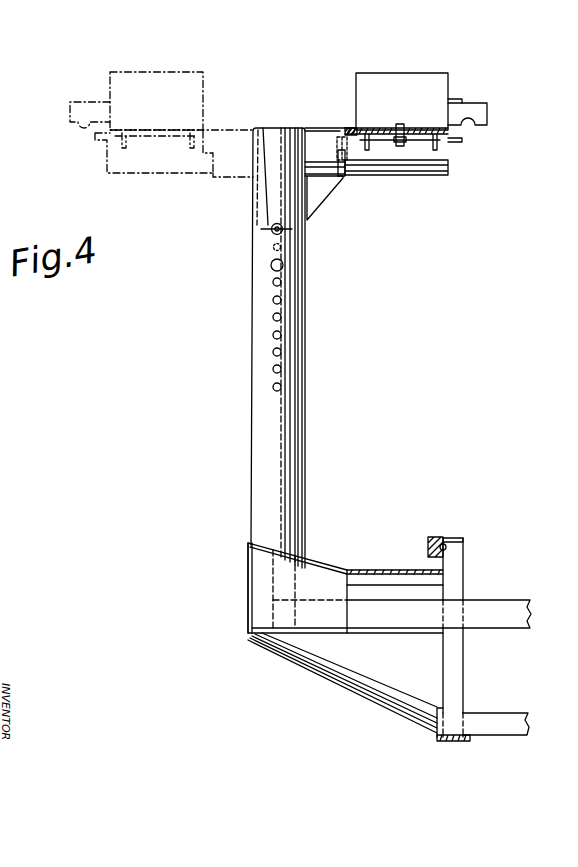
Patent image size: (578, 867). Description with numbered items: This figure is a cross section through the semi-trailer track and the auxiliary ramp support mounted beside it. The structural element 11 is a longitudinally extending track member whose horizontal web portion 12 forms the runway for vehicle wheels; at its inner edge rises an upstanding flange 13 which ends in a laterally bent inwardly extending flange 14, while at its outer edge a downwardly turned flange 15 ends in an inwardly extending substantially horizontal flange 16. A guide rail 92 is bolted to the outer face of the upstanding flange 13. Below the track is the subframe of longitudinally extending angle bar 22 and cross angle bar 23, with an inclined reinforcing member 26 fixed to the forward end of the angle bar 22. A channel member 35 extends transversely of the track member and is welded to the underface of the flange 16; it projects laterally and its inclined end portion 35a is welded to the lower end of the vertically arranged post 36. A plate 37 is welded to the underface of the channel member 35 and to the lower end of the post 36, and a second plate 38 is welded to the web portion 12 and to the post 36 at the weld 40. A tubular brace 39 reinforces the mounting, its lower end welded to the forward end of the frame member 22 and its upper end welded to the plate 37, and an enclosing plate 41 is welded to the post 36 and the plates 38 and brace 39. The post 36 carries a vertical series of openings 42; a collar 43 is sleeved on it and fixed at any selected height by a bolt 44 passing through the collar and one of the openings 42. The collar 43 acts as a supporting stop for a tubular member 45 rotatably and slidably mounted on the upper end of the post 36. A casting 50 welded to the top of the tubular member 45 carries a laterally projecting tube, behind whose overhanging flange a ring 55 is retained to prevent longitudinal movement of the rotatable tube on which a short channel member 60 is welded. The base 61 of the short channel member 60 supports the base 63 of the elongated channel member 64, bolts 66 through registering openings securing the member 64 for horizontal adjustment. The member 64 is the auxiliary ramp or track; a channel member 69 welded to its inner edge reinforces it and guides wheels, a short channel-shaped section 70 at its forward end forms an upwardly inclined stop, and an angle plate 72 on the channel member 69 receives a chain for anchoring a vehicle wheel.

The structural element 11 is at (410, 570).
The horizontal web portion 12 is at (412, 570).
The upstanding flange 13 is at (458, 564).
The inwardly extending flange 14 is at (458, 538).
The downwardly turned flange 15 is at (350, 586).
The inwardly extending horizontal flange 16 is at (360, 600).
The longitudinally extending angle bar 22 is at (464, 712).
The cross angle bar 23 is at (502, 715).
The inclined reinforcing member 26 is at (437, 740).
The channel member 35 is at (498, 610).
The inclined end portion 35a is at (306, 600).
The post 36 is at (288, 495).
The plate 37 is at (370, 633).
The second plate 38 is at (330, 568).
The tubular brace 39 is at (375, 678).
The weld 40 is at (250, 545).
The enclosing plate 41 is at (302, 575).
The opening 42 is at (272, 369).
The collar 43 is at (258, 256).
The bolt 44 is at (270, 266).
The tubular member 45 is at (262, 222).
The casting 50 is at (321, 130).
The ring 55 is at (338, 148).
The short channel member 60 is at (370, 135).
The base 61 is at (400, 141).
The base 63 is at (420, 128).
The elongated channel member 64 is at (348, 132).
The bolt 66 is at (402, 124).
The channel member 69 is at (462, 101).
The short channel-shaped section 70 is at (388, 80).
The angle plate 72 is at (488, 111).
The guide rail 92 is at (438, 537).